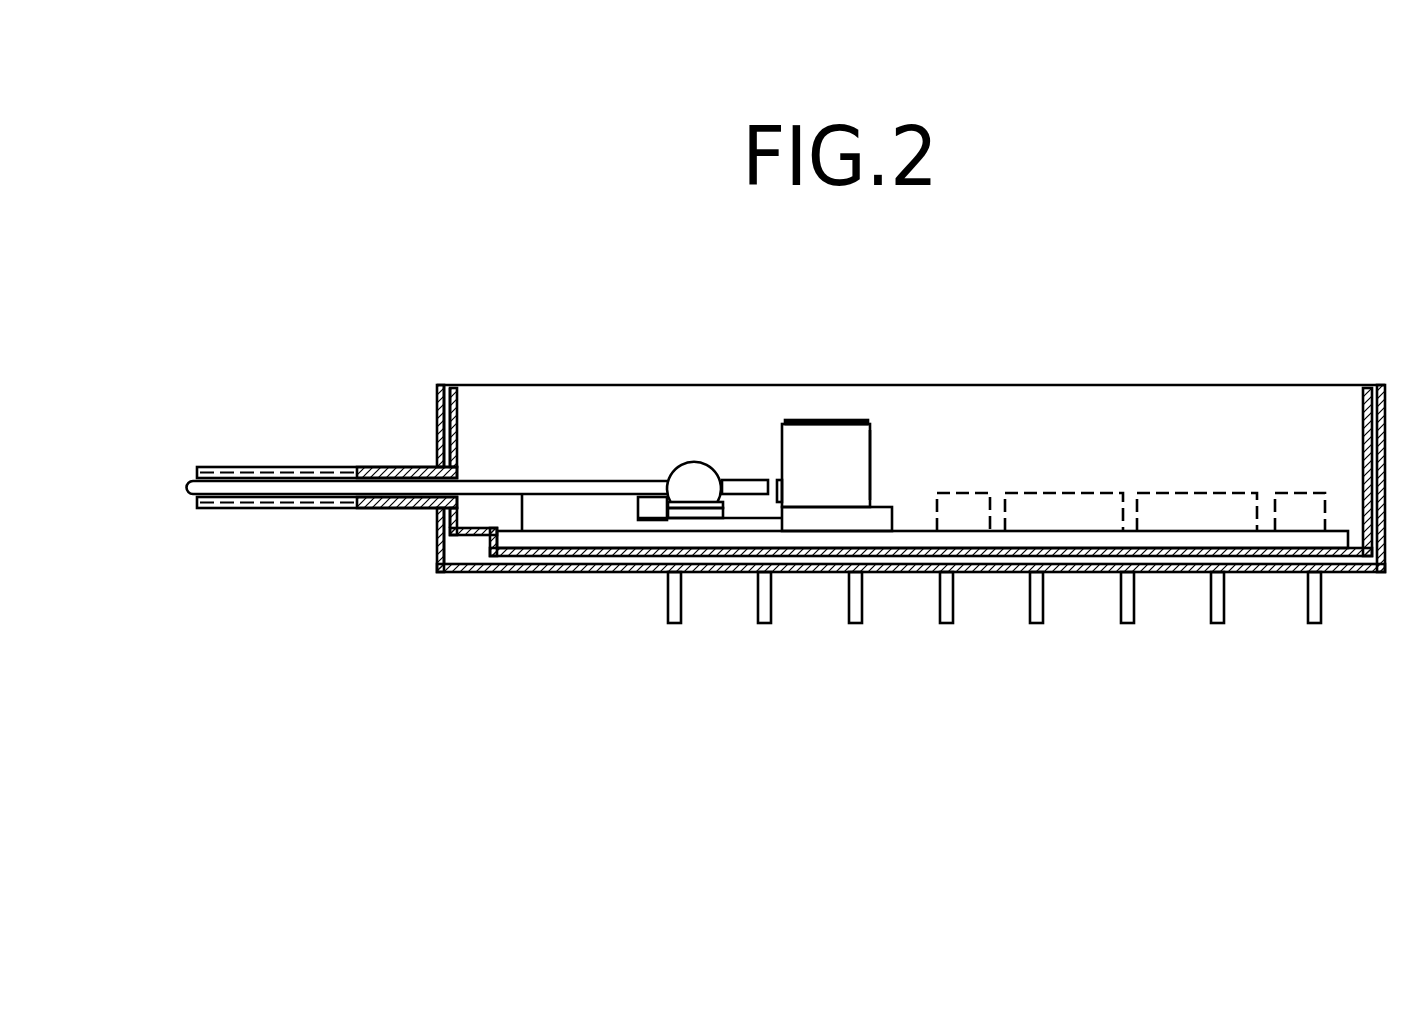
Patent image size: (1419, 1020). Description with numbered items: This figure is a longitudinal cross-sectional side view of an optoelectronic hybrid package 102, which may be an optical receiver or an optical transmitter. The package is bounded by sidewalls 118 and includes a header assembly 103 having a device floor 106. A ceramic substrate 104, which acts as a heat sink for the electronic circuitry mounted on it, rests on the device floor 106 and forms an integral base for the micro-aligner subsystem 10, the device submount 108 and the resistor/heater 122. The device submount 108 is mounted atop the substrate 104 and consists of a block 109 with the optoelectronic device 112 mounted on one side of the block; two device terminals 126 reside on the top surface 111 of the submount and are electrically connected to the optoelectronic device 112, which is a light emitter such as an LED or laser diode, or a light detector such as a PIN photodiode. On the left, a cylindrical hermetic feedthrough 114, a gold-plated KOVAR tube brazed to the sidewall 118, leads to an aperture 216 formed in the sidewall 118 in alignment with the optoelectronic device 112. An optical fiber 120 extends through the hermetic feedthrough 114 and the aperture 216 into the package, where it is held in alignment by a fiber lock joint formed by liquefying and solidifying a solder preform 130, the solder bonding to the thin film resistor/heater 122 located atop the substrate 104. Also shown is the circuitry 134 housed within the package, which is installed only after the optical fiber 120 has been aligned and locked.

The micro-aligner subsystem 10 is at (617, 508).
The optoelectronic hybrid package 102 is at (1106, 700).
The header assembly 103 is at (398, 611).
The substrate 104 is at (817, 517).
The device floor 106 is at (1318, 537).
The device submount 108 is at (793, 398).
The block 109 is at (873, 448).
The top surface 111 is at (868, 420).
The optoelectronic device 112 is at (777, 482).
The hermetic feedthrough 114 is at (258, 467).
The sidewall 118 is at (437, 393).
The optical fiber 120 is at (493, 480).
The resistor/heater 122 is at (698, 508).
The device terminals 126 is at (828, 417).
The solder preform 130 is at (692, 462).
The circuitry 134 is at (1228, 492).
The aperture 216 is at (457, 468).